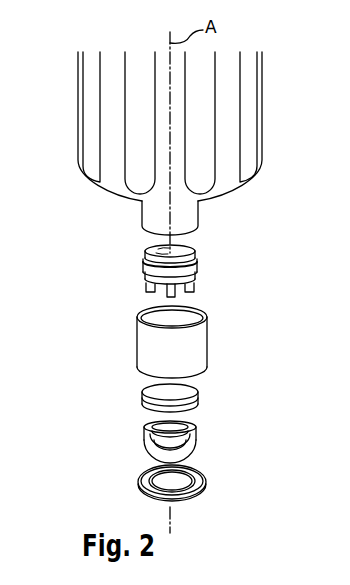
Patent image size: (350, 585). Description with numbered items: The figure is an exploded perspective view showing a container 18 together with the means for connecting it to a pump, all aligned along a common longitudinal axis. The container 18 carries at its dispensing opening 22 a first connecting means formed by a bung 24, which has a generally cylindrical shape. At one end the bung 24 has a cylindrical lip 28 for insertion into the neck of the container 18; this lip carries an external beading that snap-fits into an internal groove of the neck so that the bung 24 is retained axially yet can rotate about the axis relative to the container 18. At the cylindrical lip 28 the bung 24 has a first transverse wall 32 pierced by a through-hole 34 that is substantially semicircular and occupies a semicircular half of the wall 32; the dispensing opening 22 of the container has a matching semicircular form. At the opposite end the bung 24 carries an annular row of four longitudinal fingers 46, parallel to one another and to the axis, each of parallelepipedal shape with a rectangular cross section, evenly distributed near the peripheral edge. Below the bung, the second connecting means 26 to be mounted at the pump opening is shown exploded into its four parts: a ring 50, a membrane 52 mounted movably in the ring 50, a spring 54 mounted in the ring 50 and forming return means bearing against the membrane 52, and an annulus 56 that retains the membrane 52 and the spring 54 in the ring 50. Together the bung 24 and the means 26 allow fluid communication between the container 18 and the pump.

The container 18 is at (263, 132).
The dispensing opening 22 is at (200, 230).
The bung 24 is at (113, 263).
The second connecting means 26 is at (105, 312).
The cylindrical lip 28 is at (200, 258).
The first transverse wall 32 is at (160, 248).
The through-hole 34 is at (183, 248).
The longitudinal fingers 46 is at (195, 293).
The ring 50 is at (207, 342).
The membrane 52 is at (202, 396).
The spring 54 is at (197, 437).
The annulus 56 is at (207, 485).